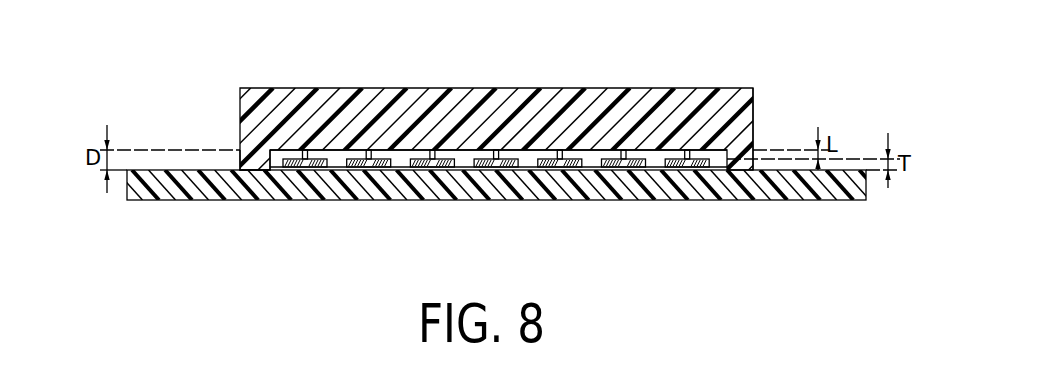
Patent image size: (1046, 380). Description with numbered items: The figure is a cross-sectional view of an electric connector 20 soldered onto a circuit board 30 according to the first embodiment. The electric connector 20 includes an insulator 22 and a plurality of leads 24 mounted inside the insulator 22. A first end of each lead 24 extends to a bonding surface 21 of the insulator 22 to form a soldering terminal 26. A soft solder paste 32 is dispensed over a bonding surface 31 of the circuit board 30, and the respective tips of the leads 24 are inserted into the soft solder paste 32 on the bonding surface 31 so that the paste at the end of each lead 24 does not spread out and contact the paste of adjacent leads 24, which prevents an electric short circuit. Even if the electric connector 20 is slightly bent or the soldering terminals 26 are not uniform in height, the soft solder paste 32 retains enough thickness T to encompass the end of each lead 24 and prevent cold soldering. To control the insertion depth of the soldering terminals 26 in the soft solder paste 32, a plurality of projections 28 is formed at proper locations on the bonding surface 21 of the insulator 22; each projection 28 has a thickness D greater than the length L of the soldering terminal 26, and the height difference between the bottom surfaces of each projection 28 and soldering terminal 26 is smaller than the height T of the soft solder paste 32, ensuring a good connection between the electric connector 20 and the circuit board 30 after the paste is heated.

The electric connector 20 is at (770, 83).
The bonding surface 21 is at (595, 150).
The insulator 22 is at (755, 116).
The leads 24 is at (298, 153).
The soldering terminal 26 is at (435, 165).
The projections 28 is at (250, 160).
The circuit board 30 is at (802, 197).
The bonding surface 31 is at (596, 163).
The soft solder paste 32 is at (296, 163).